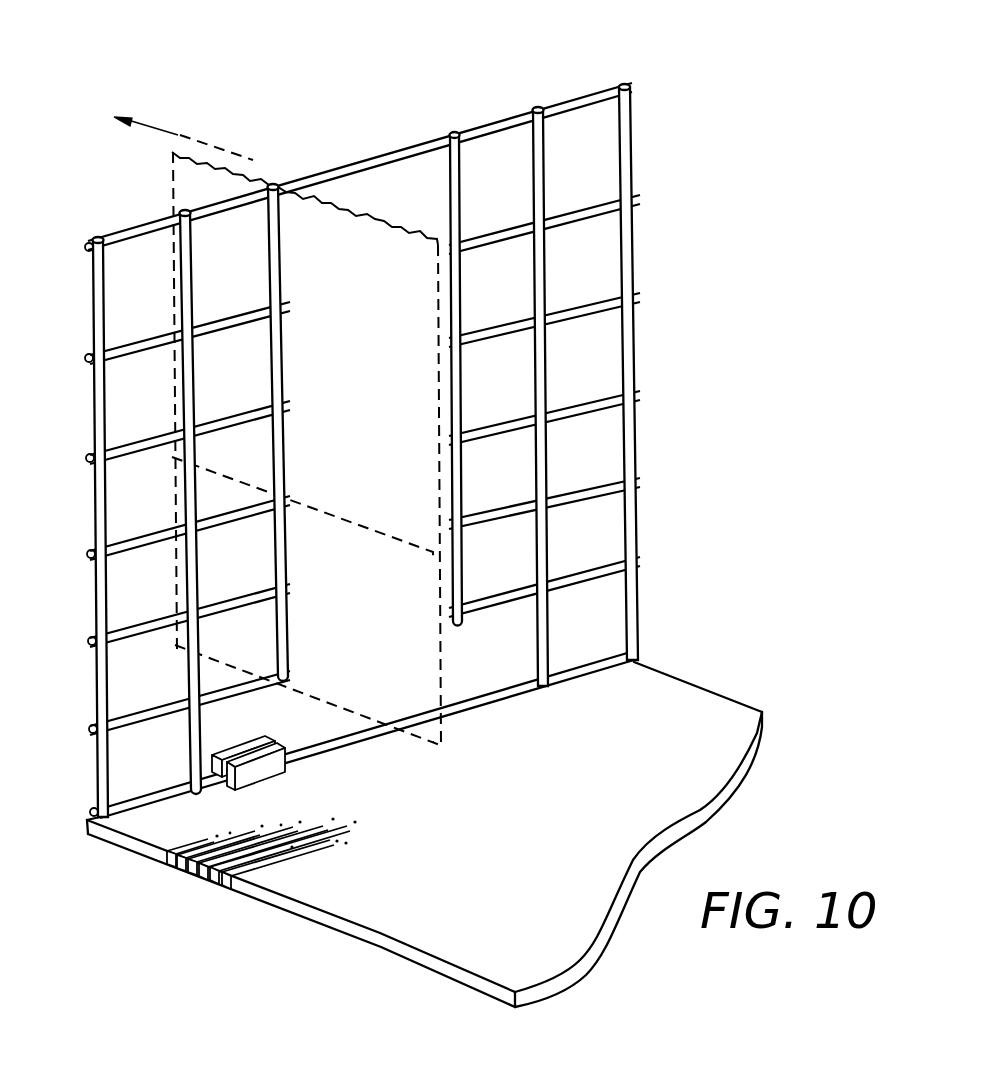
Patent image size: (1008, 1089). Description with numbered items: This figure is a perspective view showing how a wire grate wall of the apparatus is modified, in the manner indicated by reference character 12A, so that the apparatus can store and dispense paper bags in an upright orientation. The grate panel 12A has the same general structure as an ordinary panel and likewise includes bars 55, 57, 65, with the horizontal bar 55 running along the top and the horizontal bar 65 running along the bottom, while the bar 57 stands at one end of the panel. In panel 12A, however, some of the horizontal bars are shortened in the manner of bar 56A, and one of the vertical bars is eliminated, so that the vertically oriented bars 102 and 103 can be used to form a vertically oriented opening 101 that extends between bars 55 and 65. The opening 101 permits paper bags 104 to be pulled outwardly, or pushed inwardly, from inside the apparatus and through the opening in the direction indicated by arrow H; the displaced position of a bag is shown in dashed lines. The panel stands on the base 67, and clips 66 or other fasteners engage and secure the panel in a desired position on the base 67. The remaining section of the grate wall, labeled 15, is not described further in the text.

The grate panel 12A is at (335, 431).
The fixed panel section 15 is at (592, 93).
The vertically oriented opening 101 is at (437, 175).
The bar 55 is at (243, 209).
The bar 57 is at (92, 318).
The bar 56A is at (128, 353).
The vertically oriented bar 103 is at (288, 386).
The vertically oriented bar 102 is at (463, 418).
The paper bags 104 is at (338, 710).
The clips 66 is at (280, 776).
The bar 65 is at (520, 692).
The base 67 is at (707, 748).
The arrow H is at (180, 132).